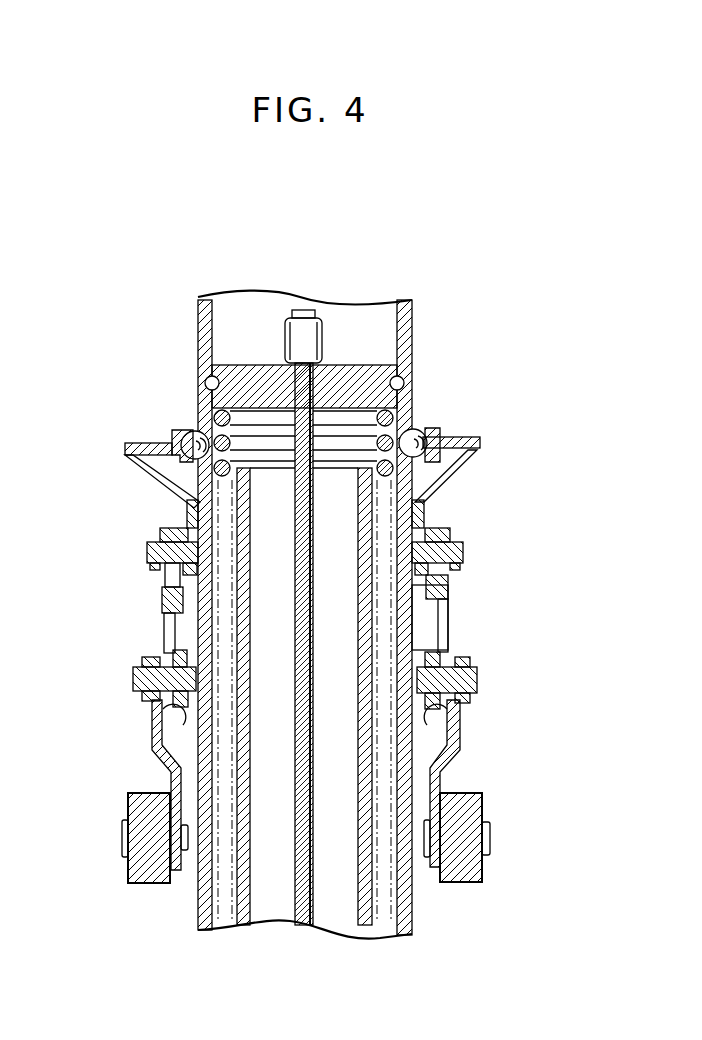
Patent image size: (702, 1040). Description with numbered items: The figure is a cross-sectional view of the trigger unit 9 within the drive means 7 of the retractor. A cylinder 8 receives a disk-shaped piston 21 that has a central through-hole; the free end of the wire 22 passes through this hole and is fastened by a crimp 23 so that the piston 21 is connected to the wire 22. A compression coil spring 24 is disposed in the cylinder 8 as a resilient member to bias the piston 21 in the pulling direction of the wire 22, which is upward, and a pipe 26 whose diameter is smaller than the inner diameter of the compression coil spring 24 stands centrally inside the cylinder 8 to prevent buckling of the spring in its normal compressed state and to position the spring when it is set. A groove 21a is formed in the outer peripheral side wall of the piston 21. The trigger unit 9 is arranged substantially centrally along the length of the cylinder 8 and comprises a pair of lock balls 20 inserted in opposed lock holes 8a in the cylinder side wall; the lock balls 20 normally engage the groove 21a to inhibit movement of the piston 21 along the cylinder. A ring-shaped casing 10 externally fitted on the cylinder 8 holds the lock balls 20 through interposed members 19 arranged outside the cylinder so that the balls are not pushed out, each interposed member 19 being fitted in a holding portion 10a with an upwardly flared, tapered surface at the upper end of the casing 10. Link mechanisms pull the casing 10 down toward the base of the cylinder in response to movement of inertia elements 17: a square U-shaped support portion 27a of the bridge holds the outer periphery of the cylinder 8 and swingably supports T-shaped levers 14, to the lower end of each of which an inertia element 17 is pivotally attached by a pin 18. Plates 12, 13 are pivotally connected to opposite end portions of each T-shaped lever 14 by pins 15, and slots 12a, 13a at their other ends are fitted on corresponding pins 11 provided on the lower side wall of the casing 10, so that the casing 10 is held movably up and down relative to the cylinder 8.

The drive means 7 is at (343, 292).
The cylinder 8 is at (412, 912).
The lock holes 8a is at (196, 414).
The trigger unit 9 is at (497, 381).
The ring-shaped casing 10 is at (483, 443).
The holding portions 10a is at (445, 470).
The pin 11 is at (147, 552).
The plate 12 is at (448, 622).
The slot 12a is at (448, 580).
The plate 13 is at (180, 525).
The slot 13a is at (163, 575).
The T-shaped lever 14 is at (152, 743).
The pins 15 is at (133, 680).
The inertia element 17 is at (155, 880).
The pin 18 is at (122, 840).
The interposed members 19 is at (438, 430).
The lock balls 20 is at (183, 432).
The piston 21 is at (270, 390).
The groove 21a is at (200, 394).
The wire 22 is at (313, 890).
The crimp 23 is at (322, 340).
The compression coil spring 24 is at (270, 455).
The pipe 26 is at (255, 888).
The support portion 27a is at (163, 720).